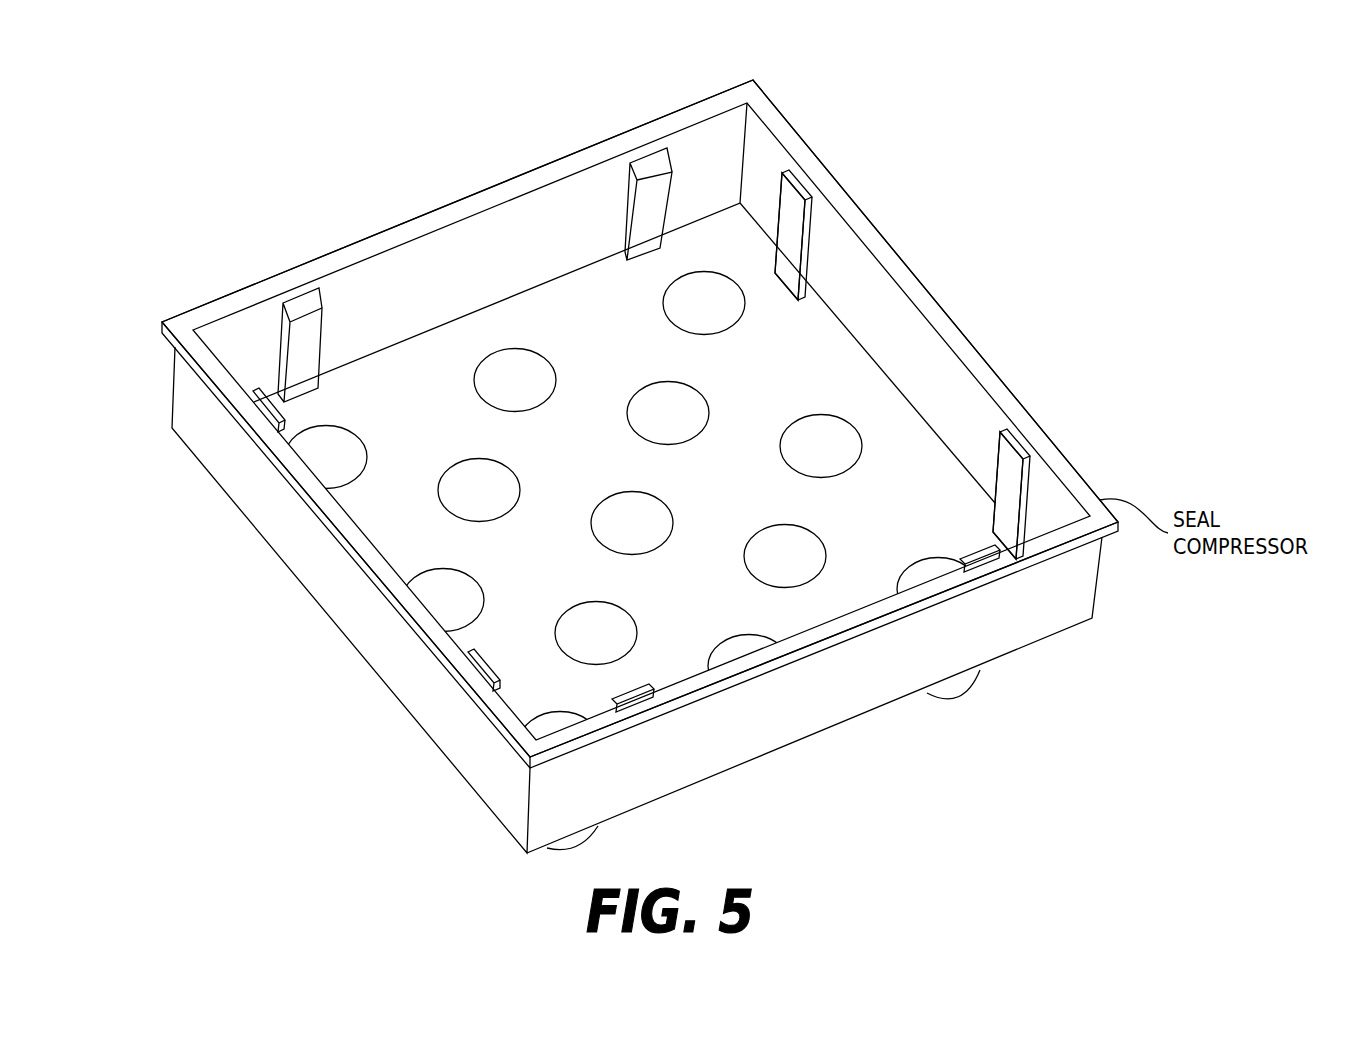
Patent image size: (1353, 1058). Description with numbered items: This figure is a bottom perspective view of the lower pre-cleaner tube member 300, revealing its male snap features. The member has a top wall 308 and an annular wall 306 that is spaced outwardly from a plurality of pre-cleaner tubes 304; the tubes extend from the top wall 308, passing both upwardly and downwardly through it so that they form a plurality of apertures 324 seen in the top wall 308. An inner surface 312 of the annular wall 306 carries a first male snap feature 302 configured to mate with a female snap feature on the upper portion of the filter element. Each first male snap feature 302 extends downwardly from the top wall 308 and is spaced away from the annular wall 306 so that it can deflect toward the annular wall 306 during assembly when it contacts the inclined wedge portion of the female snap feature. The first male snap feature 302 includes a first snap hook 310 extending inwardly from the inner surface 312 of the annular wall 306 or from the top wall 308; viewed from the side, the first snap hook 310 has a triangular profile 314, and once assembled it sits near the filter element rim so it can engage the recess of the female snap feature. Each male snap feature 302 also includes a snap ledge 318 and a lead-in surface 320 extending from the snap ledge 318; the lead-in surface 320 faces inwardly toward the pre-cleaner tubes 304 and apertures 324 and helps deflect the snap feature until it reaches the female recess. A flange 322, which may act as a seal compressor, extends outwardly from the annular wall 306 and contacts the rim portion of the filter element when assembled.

The lower pre-cleaner tube member 300 is at (578, 97).
The first male snap feature 302 is at (660, 195).
The pre-cleaner tubes 304 is at (826, 442).
The annular wall 306 is at (930, 405).
The top wall 308 is at (574, 471).
The first snap hook 310 is at (1003, 437).
The inner surface 312 is at (441, 268).
The triangular profile 314 is at (1005, 458).
The snap ledge 318 is at (778, 228).
The lead-in surface 320 is at (793, 190).
The flange 322 is at (776, 120).
The apertures 324 is at (826, 418).